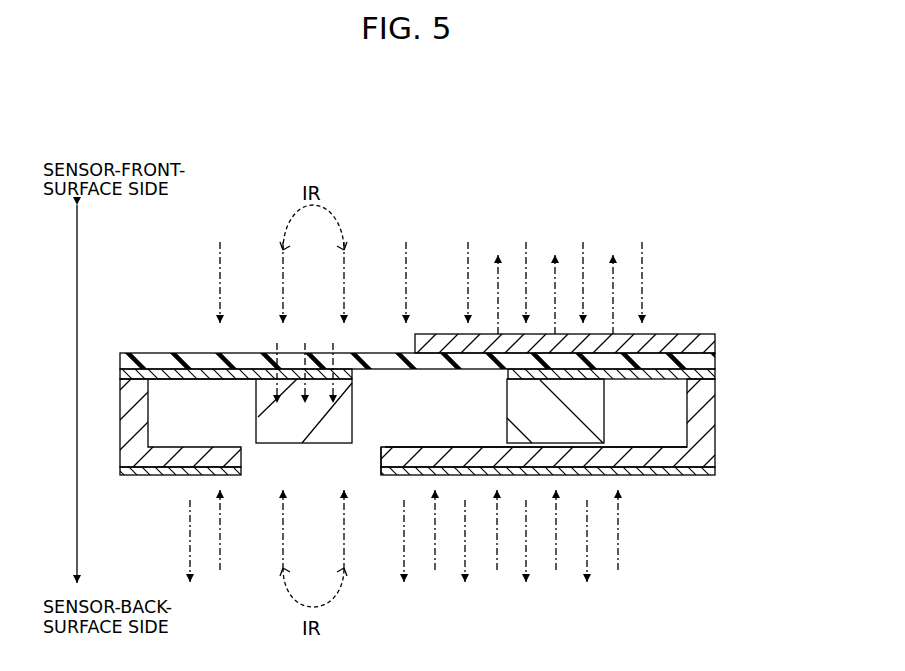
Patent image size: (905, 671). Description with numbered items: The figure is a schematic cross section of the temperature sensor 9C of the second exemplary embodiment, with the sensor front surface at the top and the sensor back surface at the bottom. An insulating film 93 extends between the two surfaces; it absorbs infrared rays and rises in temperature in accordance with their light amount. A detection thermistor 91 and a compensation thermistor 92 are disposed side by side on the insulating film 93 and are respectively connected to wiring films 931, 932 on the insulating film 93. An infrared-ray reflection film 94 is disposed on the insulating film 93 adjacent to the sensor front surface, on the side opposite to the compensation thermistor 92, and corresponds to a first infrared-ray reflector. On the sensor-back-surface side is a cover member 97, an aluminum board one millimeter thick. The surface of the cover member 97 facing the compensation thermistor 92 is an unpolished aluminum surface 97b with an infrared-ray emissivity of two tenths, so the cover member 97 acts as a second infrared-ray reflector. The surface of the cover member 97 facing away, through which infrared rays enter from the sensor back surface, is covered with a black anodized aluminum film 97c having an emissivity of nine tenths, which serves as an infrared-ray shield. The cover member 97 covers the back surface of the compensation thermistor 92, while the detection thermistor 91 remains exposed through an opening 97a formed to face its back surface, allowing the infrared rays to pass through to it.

The temperature sensor 9C is at (652, 203).
The infrared-ray reflection film 94 is at (718, 338).
The insulating film 93 is at (714, 362).
The wiring film 932 is at (715, 378).
The wiring film 931 is at (188, 375).
The detection thermistor 91 is at (346, 412).
The compensation thermistor 92 is at (596, 411).
The cover member 97 is at (722, 444).
The opening 97a is at (380, 456).
The unpolished aluminum surface 97b is at (447, 447).
The black anodized aluminum film 97c is at (715, 471).